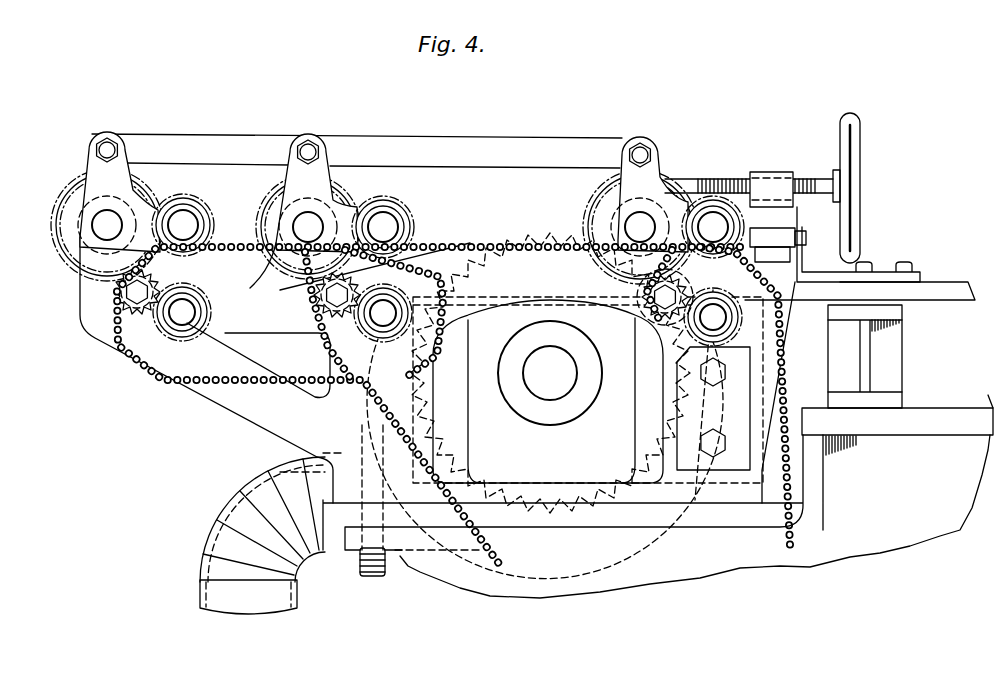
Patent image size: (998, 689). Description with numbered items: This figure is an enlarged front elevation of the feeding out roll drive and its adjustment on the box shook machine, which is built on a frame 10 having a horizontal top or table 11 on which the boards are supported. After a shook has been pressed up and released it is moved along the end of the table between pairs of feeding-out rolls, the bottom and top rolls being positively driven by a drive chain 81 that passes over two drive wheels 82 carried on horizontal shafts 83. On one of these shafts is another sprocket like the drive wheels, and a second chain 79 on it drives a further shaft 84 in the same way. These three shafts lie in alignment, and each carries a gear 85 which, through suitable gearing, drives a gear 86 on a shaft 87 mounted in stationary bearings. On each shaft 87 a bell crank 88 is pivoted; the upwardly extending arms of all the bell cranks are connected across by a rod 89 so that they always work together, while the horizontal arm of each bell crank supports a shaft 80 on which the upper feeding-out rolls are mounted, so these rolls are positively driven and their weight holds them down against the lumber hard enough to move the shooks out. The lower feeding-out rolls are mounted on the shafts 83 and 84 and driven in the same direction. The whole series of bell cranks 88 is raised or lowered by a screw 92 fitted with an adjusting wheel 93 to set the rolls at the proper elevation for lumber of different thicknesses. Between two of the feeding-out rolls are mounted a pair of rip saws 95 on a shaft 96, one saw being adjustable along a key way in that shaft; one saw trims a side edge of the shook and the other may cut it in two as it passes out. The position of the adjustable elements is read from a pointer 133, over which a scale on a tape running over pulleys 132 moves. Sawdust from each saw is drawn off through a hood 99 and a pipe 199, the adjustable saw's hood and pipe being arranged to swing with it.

The frame 10 is at (896, 353).
The table 11 is at (925, 292).
The chain 79 is at (240, 243).
The shaft 80 is at (190, 218).
The drive chain 81 is at (448, 233).
The drive wheel 82 is at (355, 368).
The horizontal shaft 83 is at (428, 302).
The shaft 84 is at (175, 320).
The gear 85 is at (205, 293).
The gear 86 is at (66, 196).
The shaft 87 is at (100, 232).
The bell crank 88 is at (660, 172).
The rod 89 is at (510, 133).
The screw 92 is at (803, 178).
The adjusting wheel 93 is at (860, 142).
The rip saw 95 is at (452, 242).
The shaft 96 is at (550, 380).
The hood 99 is at (392, 556).
The pulley 132 is at (800, 236).
The pointer 133 is at (800, 256).
The pipe 199 is at (305, 562).